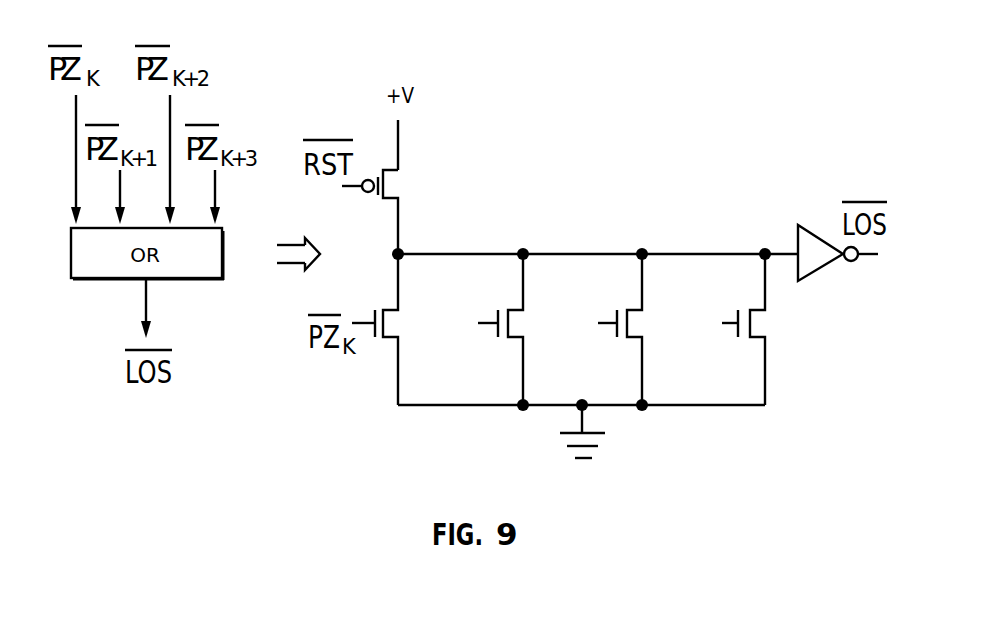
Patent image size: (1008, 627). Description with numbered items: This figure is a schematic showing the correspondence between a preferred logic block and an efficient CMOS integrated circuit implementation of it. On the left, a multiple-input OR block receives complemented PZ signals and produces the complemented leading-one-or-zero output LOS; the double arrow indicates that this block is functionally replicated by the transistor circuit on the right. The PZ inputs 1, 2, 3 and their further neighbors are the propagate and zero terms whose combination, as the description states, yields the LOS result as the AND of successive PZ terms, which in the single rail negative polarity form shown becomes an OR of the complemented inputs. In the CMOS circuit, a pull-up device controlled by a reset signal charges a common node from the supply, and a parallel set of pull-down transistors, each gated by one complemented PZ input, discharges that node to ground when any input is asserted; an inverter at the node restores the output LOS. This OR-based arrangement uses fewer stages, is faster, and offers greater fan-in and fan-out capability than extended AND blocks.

The pull-down transistor for PZ K+ 1 is at (470, 329).
The pull-down transistor for PZ K+ 2 is at (590, 329).
The pull-down transistor for PZ K+ 3 is at (713, 329).